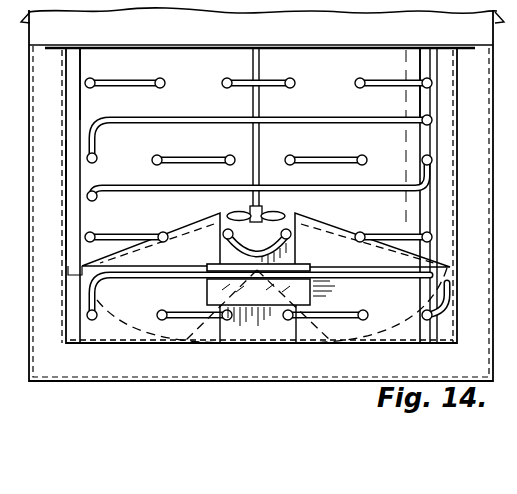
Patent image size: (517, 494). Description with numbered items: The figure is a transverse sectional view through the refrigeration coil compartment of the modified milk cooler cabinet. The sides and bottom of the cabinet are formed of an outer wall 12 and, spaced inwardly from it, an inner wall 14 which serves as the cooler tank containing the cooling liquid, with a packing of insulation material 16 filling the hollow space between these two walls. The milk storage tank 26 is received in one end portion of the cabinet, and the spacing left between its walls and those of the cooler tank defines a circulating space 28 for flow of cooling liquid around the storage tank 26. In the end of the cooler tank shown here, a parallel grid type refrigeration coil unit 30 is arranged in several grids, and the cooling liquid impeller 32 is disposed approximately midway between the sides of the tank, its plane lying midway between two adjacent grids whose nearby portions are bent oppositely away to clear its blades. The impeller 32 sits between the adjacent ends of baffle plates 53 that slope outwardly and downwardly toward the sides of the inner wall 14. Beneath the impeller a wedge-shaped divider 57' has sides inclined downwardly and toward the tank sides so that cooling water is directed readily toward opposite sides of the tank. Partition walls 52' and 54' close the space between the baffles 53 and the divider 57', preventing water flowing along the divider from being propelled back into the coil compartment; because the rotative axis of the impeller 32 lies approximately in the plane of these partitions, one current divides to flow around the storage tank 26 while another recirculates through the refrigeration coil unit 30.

The outer wall 12 is at (140, 383).
The inner wall 14 is at (66, 152).
The insulation material 16 is at (382, 370).
The milk storage tank 26 is at (332, 81).
The circulating space 28 is at (66, 201).
The refrigeration coil unit 30 is at (343, 122).
The impeller 32 is at (276, 216).
The partition wall 52' is at (166, 316).
The baffle plates 53 is at (197, 225).
The partition wall 54' is at (373, 305).
The wedge-shaped divider 57' is at (259, 316).